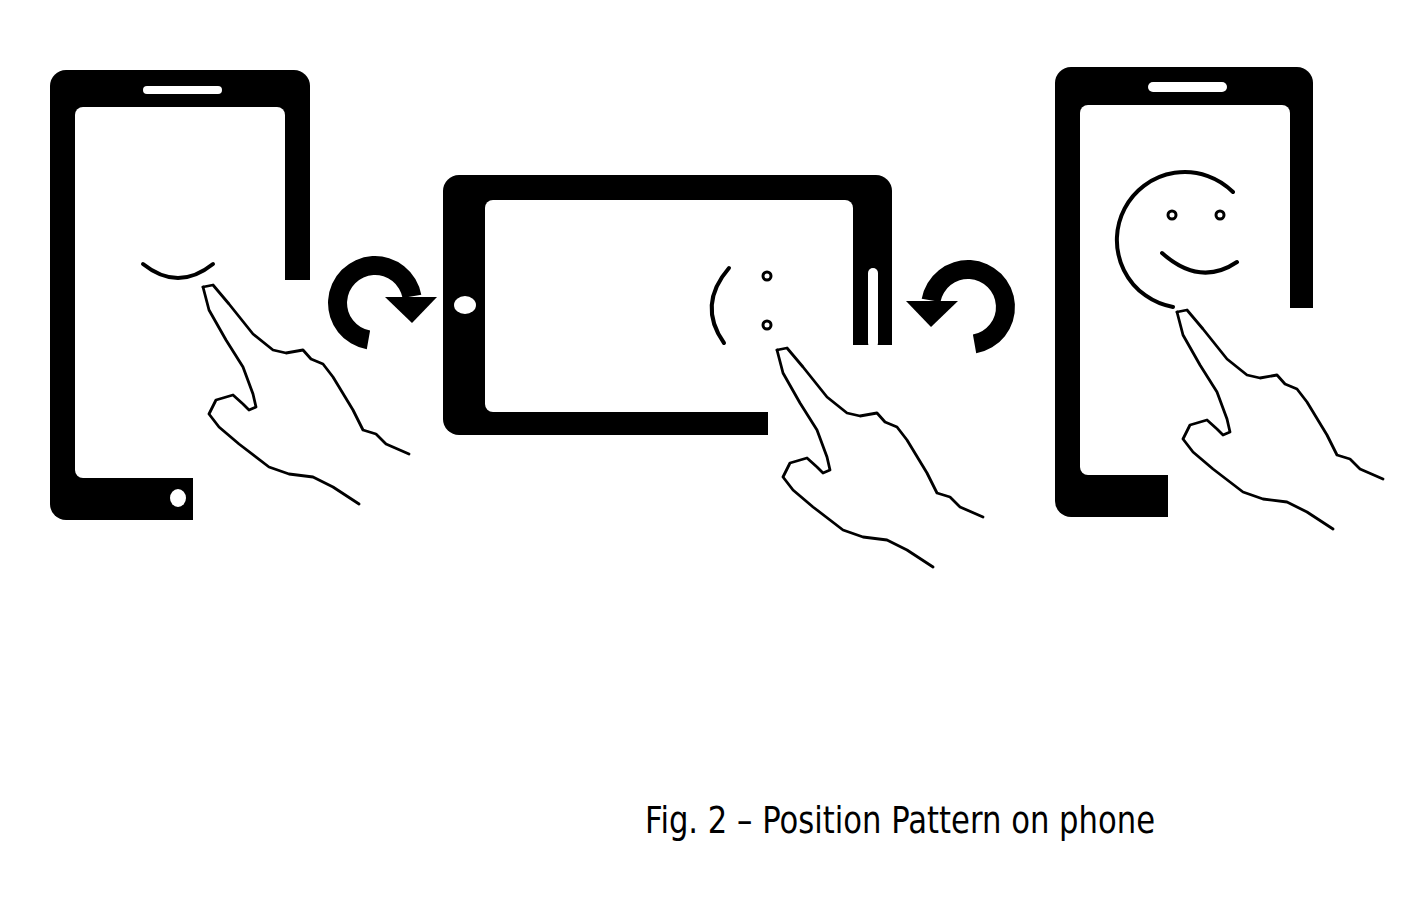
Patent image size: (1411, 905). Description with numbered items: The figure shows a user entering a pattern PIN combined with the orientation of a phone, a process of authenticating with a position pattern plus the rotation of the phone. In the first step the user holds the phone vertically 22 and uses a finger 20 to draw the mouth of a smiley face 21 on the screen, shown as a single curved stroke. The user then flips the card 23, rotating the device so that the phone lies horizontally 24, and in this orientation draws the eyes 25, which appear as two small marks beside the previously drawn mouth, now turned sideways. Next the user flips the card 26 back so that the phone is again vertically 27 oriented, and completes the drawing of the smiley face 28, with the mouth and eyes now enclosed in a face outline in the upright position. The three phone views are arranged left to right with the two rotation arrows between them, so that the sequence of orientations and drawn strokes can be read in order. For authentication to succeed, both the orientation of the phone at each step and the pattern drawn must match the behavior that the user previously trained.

The finger 20 is at (282, 394).
The mouth of a smiley face 21 is at (172, 238).
The phone oriented vertically 22 is at (186, 281).
The flip of the card 23 is at (382, 279).
The phone oriented horizontally 24 is at (673, 291).
The eyes 25 is at (856, 454).
The flip of the card 26 is at (960, 282).
The phone oriented vertically 27 is at (1186, 277).
The completed smiley face 28 is at (1280, 408).